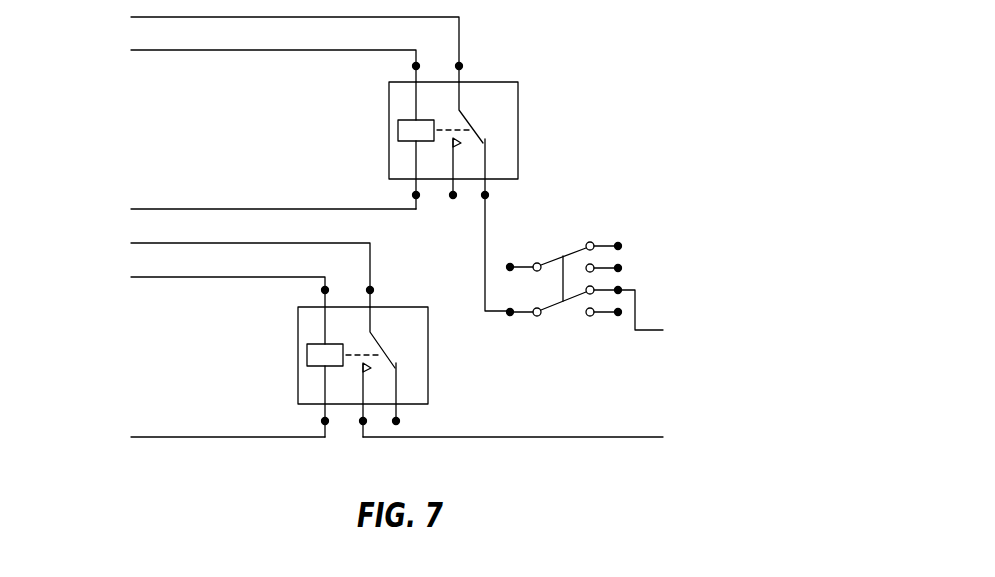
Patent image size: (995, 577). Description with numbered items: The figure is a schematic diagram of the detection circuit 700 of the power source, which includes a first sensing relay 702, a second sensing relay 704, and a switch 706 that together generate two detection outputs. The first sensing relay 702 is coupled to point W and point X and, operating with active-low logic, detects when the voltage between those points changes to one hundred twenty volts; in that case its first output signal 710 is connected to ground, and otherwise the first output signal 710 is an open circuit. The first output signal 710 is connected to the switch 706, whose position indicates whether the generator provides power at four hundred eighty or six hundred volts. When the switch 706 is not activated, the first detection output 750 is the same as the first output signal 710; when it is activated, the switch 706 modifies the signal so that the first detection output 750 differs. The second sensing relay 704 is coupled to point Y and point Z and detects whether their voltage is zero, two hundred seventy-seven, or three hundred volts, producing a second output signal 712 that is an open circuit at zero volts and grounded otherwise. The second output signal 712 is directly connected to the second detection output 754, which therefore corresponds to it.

The detection circuit 700 is at (449, 254).
The first sensing relay 702 is at (497, 108).
The second sensing relay 704 is at (400, 322).
The switch 706 is at (638, 251).
The first output signal 710 is at (486, 222).
The second output signal 712 is at (490, 437).
The first detection output 750 is at (746, 327).
The second detection output 754 is at (659, 486).